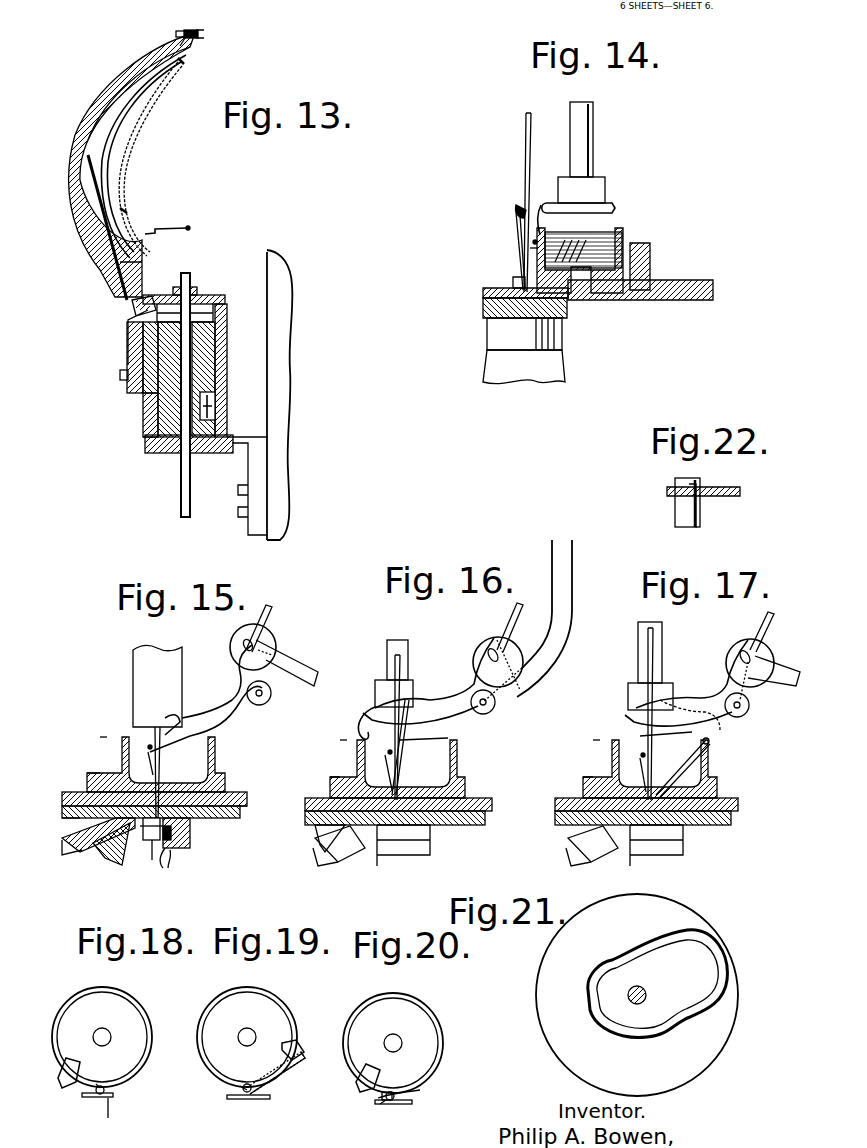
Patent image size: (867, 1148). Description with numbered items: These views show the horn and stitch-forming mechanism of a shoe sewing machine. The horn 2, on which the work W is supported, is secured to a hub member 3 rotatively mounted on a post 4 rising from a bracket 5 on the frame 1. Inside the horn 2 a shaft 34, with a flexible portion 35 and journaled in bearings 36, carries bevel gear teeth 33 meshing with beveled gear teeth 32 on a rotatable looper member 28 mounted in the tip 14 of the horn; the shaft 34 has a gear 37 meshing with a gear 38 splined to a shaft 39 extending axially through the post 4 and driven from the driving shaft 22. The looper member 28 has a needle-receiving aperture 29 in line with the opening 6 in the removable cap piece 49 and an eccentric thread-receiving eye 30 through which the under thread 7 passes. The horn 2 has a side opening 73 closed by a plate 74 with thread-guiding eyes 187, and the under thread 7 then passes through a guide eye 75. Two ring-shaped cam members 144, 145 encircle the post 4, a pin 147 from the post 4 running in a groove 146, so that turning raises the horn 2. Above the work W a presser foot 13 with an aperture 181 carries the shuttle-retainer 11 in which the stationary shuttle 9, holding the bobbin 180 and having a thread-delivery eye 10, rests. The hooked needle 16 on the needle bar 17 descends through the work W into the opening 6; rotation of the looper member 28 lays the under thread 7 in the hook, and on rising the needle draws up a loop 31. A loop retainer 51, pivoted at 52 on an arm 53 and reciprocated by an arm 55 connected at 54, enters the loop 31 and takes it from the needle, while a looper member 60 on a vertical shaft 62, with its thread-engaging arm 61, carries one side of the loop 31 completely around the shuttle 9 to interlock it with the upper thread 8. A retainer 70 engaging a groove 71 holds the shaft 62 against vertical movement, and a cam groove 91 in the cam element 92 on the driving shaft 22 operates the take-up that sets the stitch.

In FIG. 13, the frame 1 is at (284, 349).
In FIG. 13, the horn 2 is at (110, 80).
In FIG. 14, the horn 2 is at (550, 372).
In FIG. 15, the horn 2 is at (62, 848).
In FIG. 16, the horn 2 is at (325, 860).
In FIG. 17, the horn 2 is at (578, 860).
In FIG. 13, the bearing or hub member 3 is at (140, 385).
In FIG. 13, the post 4 is at (148, 400).
In FIG. 13, the bracket 5 is at (152, 455).
In FIG. 13, the opening 6 is at (190, 32).
In FIG. 15, the opening 6 is at (75, 798).
In FIG. 13, the under thread 7 is at (196, 32).
In FIG. 14, the under thread 7 is at (512, 270).
In FIG. 15, the under thread 7 is at (166, 856).
In FIG. 16, the under thread 7 is at (448, 740).
In FIG. 17, the under thread 7 is at (648, 738).
In FIG. 18, the under thread 7 is at (111, 1121).
In FIG. 19, the under thread 7 is at (290, 1085).
In FIG. 20, the under thread 7 is at (378, 1100).
In FIG. 14, the upper thread 8 is at (530, 249).
In FIG. 15, the upper thread 8 is at (148, 755).
In FIG. 16, the upper thread 8 is at (388, 762).
In FIG. 17, the upper thread 8 is at (640, 765).
In FIG. 18, the upper thread 8 is at (96, 1088).
In FIG. 19, the upper thread 8 is at (240, 1089).
In FIG. 20, the upper thread 8 is at (380, 1106).
In FIG. 14, the shuttle 9 is at (632, 234).
In FIG. 15, the shuttle 9 is at (192, 768).
In FIG. 16, the shuttle 9 is at (432, 768).
In FIG. 17, the shuttle 9 is at (700, 768).
In FIG. 18, the shuttle 9 is at (140, 1005).
In FIG. 19, the shuttle 9 is at (282, 1005).
In FIG. 20, the shuttle 9 is at (430, 1008).
In FIG. 14, the thread-delivery eye 10 is at (532, 243).
In FIG. 15, the thread-delivery eye 10 is at (148, 745).
In FIG. 16, the thread-delivery eye 10 is at (388, 752).
In FIG. 17, the thread-delivery eye 10 is at (641, 755).
In FIG. 14, the shuttle-retainer 11 is at (652, 252).
In FIG. 15, the shuttle-retainer 11 is at (100, 740).
In FIG. 16, the shuttle-retainer 11 is at (340, 748).
In FIG. 17, the shuttle-retainer 11 is at (593, 748).
In FIG. 14, the presser foot 13 is at (605, 300).
In FIG. 15, the presser foot 13 is at (88, 777).
In FIG. 16, the presser foot 13 is at (332, 785).
In FIG. 17, the presser foot 13 is at (585, 785).
In FIG. 14, the tip of the horn 14 is at (565, 338).
In FIG. 16, the tip of the horn 14 is at (432, 848).
In FIG. 17, the tip of the horn 14 is at (686, 848).
In FIG. 14, the hooked needle 16 is at (522, 137).
In FIG. 15, the hooked needle 16 is at (162, 756).
In FIG. 16, the hooked needle 16 is at (402, 664).
In FIG. 17, the hooked needle 16 is at (656, 662).
In FIG. 18, the hooked needle 16 is at (106, 1090).
In FIG. 19, the hooked needle 16 is at (248, 1084).
In FIG. 20, the hooked needle 16 is at (398, 1096).
In FIG. 15, the needle bar 17 is at (135, 653).
In FIG. 21, the driving shaft 22 is at (628, 998).
In FIG. 13, the looper member 28 is at (200, 38).
In FIG. 15, the looper member 28 is at (145, 840).
In FIG. 15, the needle-receiving aperture 29 is at (152, 850).
In FIG. 15, the thread-receiving eye 30 is at (173, 862).
In FIG. 14, the loop 31 is at (516, 224).
In FIG. 16, the loop 31 is at (412, 700).
In FIG. 15, the beveled gear teeth 32 is at (190, 840).
In FIG. 15, the bevel gear teeth 33 is at (70, 838).
In FIG. 13, the shaft 34 is at (125, 72).
In FIG. 15, the shaft 34 is at (100, 855).
In FIG. 13, the flexible portion 35 is at (107, 147).
In FIG. 13, the bearings 36 is at (162, 48).
In FIG. 13, the gear 37 is at (125, 310).
In FIG. 13, the gear 38 is at (212, 295).
In FIG. 13, the shaft 39 is at (212, 312).
In FIG. 14, the cap piece 49 is at (495, 323).
In FIG. 15, the cap piece 49 is at (75, 822).
In FIG. 16, the cap piece 49 is at (320, 833).
In FIG. 17, the cap piece 49 is at (575, 833).
In FIG. 14, the loop retainer 51 is at (516, 208).
In FIG. 15, the loop retainer 51 is at (206, 710).
In FIG. 16, the loop retainer 51 is at (456, 696).
In FIG. 17, the loop retainer 51 is at (692, 705).
In FIG. 18, the loop retainer 51 is at (90, 1100).
In FIG. 19, the loop retainer 51 is at (243, 1102).
In FIG. 20, the loop retainer 51 is at (406, 1106).
In FIG. 15, the pivot 52 is at (250, 640).
In FIG. 16, the pivot 52 is at (490, 648).
In FIG. 17, the pivot 52 is at (743, 650).
In FIG. 15, the arm 53 is at (270, 608).
In FIG. 16, the arm 53 is at (510, 610).
In FIG. 17, the arm 53 is at (766, 616).
In FIG. 15, the pivotal connection 54 is at (263, 694).
In FIG. 16, the pivotal connection 54 is at (487, 702).
In FIG. 17, the pivotal connection 54 is at (741, 706).
In FIG. 15, the arm 55 is at (308, 664).
In FIG. 16, the arm 55 is at (572, 586).
In FIG. 17, the arm 55 is at (782, 666).
In FIG. 14, the looper member 60 is at (612, 205).
In FIG. 16, the looper member 60 is at (378, 705).
In FIG. 17, the looper member 60 is at (625, 712).
In FIG. 14, the thread-engaging arm 61 is at (542, 200).
In FIG. 16, the thread-engaging arm 61 is at (362, 722).
In FIG. 17, the thread-engaging arm 61 is at (712, 740).
In FIG. 18, the thread-engaging arm 61 is at (62, 1070).
In FIG. 19, the thread-engaging arm 61 is at (298, 1042).
In FIG. 20, the thread-engaging arm 61 is at (358, 1076).
In FIG. 14, the shaft 62 is at (598, 138).
In FIG. 22, the shaft 62 is at (676, 509).
In FIG. 16, the shaft 62 is at (404, 641).
In FIG. 17, the shaft 62 is at (663, 636).
In FIG. 22, the retainer 70 is at (730, 488).
In FIG. 22, the groove 71 is at (700, 508).
In FIG. 13, the opening 73 is at (128, 105).
In FIG. 13, the plate 74 is at (118, 195).
In FIG. 13, the guide eye 75 is at (188, 227).
In FIG. 21, the cam groove 91 is at (706, 1004).
In FIG. 21, the cam element 92 is at (712, 1040).
In FIG. 13, the cam member 144 is at (147, 415).
In FIG. 13, the cam member 145 is at (150, 432).
In FIG. 13, the groove 146 is at (215, 400).
In FIG. 13, the pin 147 is at (213, 408).
In FIG. 14, the bobbin 180 is at (590, 240).
In FIG. 14, the aperture 181 is at (483, 290).
In FIG. 13, the thread-guiding eyes 187 is at (163, 85).
In FIG. 15, the work W is at (230, 818).
In FIG. 16, the work W is at (480, 826).
In FIG. 17, the work W is at (727, 826).